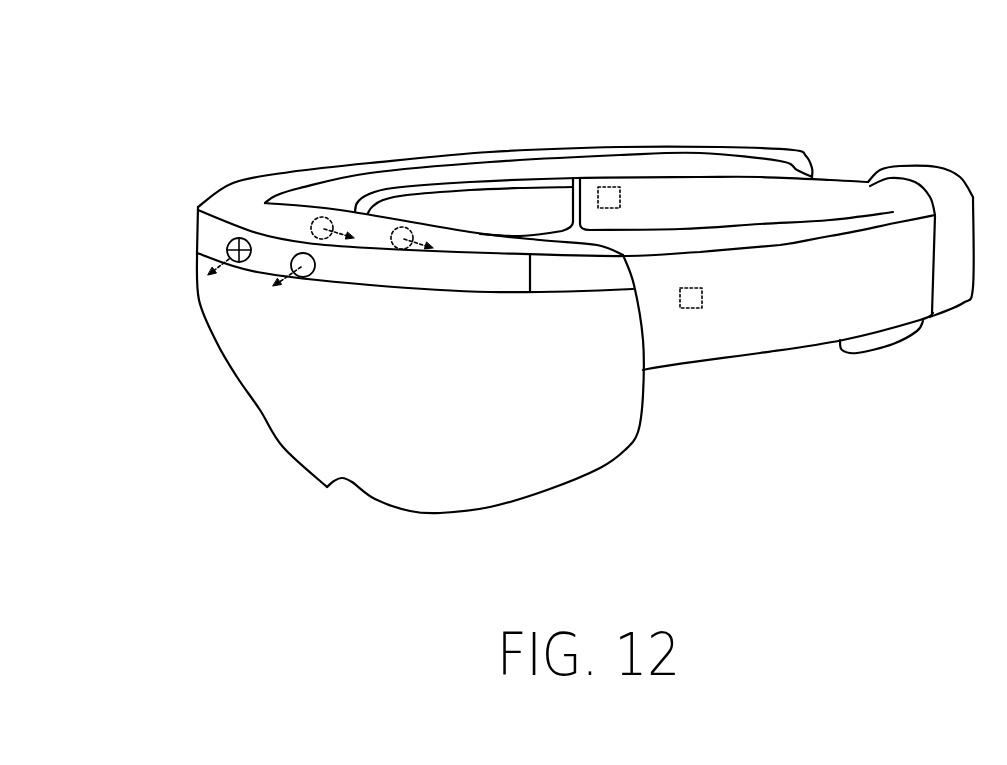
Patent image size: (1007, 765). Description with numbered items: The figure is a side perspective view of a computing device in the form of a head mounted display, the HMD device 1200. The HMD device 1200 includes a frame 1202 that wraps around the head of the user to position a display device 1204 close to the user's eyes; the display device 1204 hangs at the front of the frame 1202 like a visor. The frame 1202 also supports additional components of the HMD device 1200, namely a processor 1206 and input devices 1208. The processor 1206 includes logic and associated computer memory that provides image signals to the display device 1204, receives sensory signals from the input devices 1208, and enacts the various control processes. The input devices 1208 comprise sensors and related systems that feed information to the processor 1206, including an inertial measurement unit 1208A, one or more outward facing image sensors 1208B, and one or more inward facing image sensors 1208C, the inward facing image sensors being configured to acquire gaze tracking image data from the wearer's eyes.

The HMD device 1200 is at (588, 287).
The frame 1202 is at (940, 190).
The display device 1204 is at (287, 450).
The processor 1206 is at (702, 296).
The input devices 1208 is at (675, 128).
The inertial measurement unit (IMU) 1208A is at (608, 187).
The outward facing image sensors 1208B is at (237, 247).
The inward facing image sensors 1208C is at (312, 223).